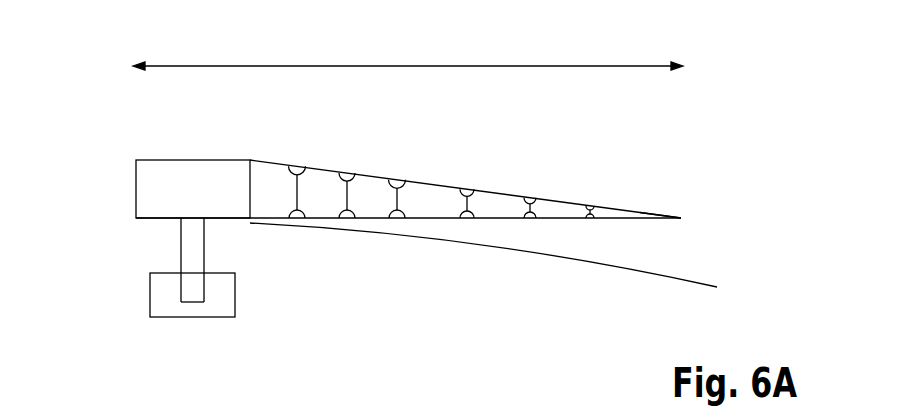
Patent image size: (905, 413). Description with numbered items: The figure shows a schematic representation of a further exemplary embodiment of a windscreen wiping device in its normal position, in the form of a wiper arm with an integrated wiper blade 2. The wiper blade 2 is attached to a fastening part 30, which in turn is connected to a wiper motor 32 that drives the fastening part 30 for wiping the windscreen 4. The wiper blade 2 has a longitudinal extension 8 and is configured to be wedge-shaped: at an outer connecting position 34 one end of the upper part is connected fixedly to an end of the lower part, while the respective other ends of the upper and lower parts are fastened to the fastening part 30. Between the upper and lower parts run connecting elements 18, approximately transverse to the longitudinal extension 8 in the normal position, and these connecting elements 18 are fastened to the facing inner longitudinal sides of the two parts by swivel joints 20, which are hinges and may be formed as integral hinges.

The wiper blade 2 is at (591, 144).
The windscreen 4 is at (670, 278).
The longitudinal extension 8 is at (423, 65).
The connecting elements 18 is at (298, 196).
The swivel joints 20 is at (295, 167).
The fastening part 30 is at (140, 183).
The wiper motor 32 is at (158, 292).
The outer connecting position 34 is at (682, 216).